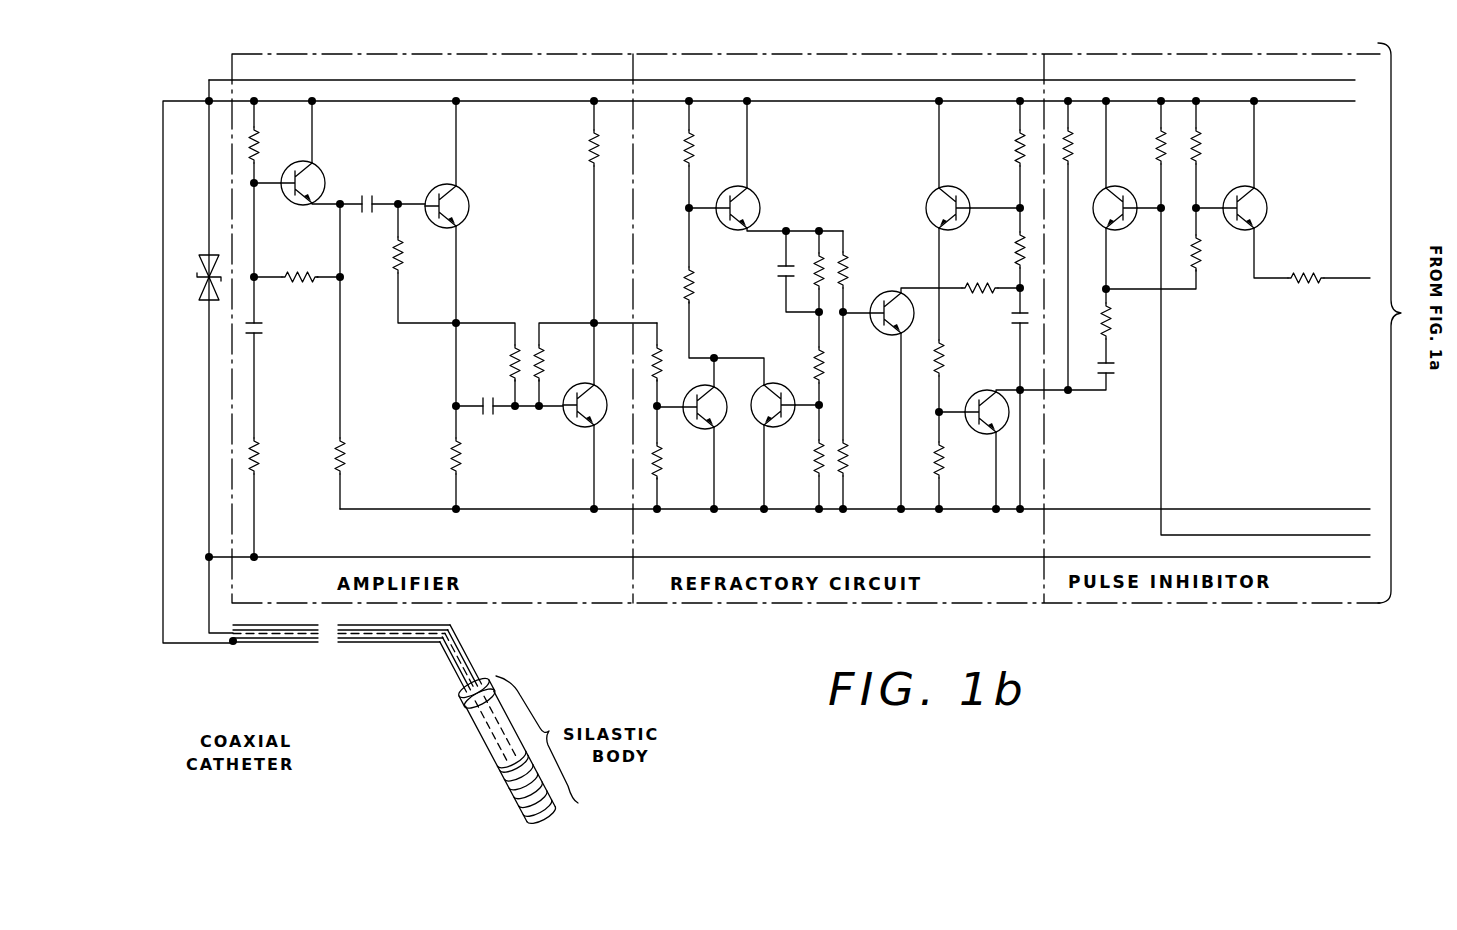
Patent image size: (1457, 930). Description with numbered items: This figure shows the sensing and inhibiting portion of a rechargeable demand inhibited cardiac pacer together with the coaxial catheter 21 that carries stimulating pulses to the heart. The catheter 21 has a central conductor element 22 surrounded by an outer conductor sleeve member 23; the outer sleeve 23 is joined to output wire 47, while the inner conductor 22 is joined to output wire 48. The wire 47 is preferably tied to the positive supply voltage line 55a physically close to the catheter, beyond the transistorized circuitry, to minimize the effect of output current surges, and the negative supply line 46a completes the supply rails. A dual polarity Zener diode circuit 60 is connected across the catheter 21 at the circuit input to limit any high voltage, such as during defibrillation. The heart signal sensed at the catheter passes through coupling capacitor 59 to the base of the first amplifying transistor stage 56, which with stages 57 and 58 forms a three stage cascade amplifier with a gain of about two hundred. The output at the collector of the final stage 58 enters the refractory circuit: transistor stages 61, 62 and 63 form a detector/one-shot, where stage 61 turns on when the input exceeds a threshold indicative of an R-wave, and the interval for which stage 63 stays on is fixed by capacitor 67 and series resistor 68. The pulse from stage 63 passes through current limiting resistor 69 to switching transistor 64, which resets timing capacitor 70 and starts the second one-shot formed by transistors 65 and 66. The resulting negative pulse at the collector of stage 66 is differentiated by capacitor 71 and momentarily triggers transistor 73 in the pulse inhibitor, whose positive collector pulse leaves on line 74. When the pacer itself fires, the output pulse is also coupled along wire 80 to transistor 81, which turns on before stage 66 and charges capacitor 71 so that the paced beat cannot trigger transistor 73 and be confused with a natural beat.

The coaxial catheter 21 is at (428, 689).
The central conductor element 22 is at (208, 602).
The outer conductor sleeve member 23 is at (235, 645).
The negative supply line 46a is at (1322, 502).
The wire 47 is at (1252, 81).
The wire 48 is at (1098, 557).
The positive supply voltage line 55a is at (1336, 134).
The first amplifying transistor stage 56 is at (318, 166).
The transistor stage 57 is at (467, 193).
The final amplifier stage 58 is at (578, 427).
The coupling capacitor 59 is at (262, 328).
The dual polarity Zener diode circuit 60 is at (205, 268).
The transistor stage 61 is at (722, 425).
The transistor stage 62 is at (770, 384).
The transistor stage 63 is at (753, 192).
The switching transistor 64 is at (877, 292).
The transistor stage 65 is at (931, 194).
The transistor stage 66 is at (968, 394).
The capacitor 67 is at (781, 261).
The resistor 68 is at (817, 349).
The current limiting resistor 69 is at (847, 261).
The timing capacitor 70 is at (1015, 333).
The capacitor 71 is at (1110, 372).
The transistor stage 73 is at (1262, 193).
The line 74 is at (1333, 283).
The wire 80 is at (1161, 524).
The transistor stage 81 is at (1110, 228).